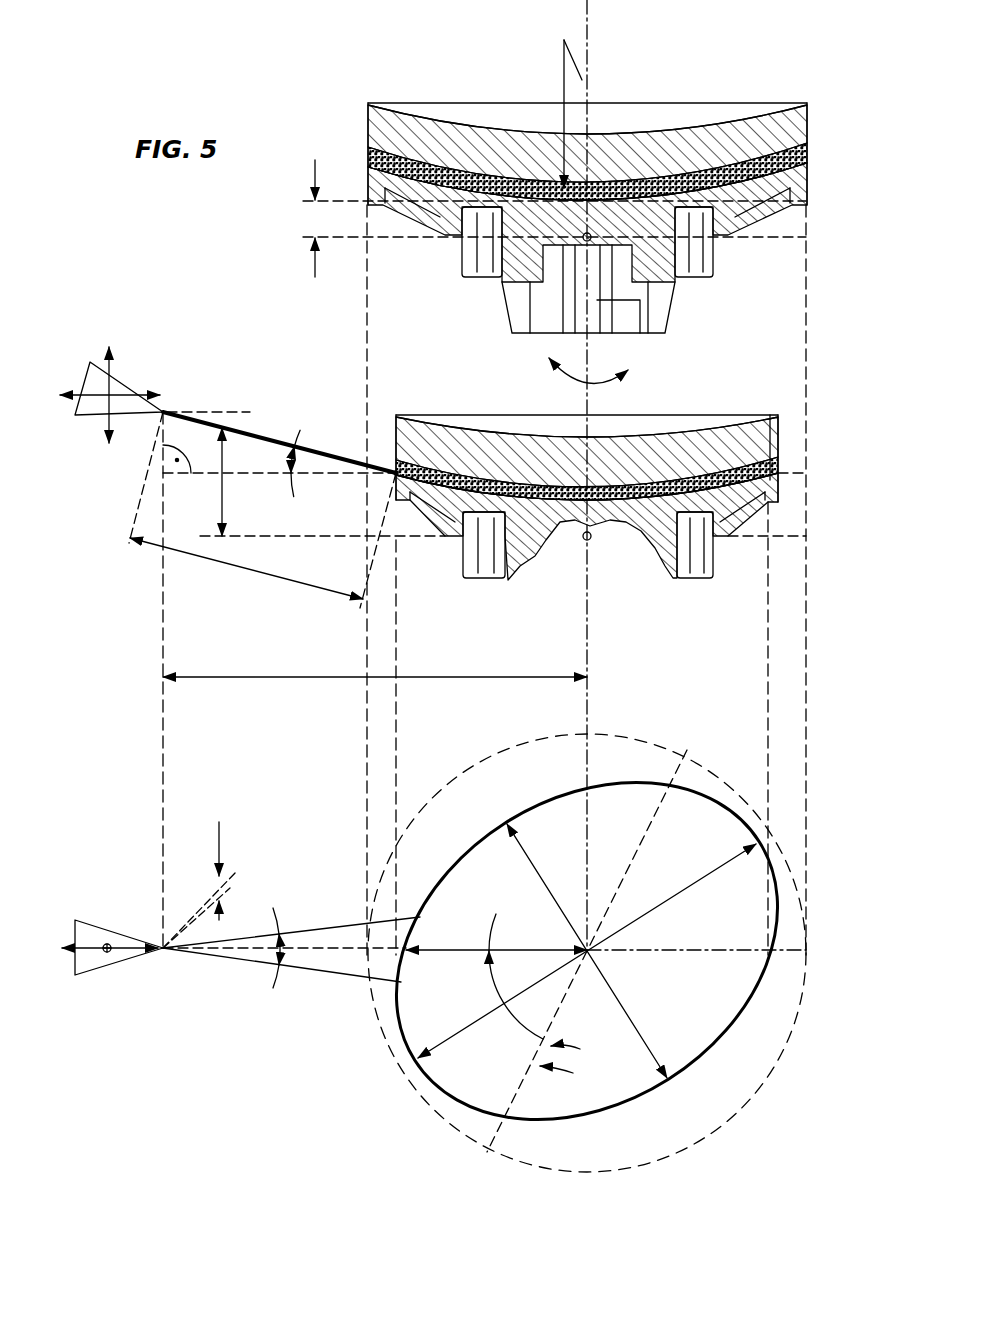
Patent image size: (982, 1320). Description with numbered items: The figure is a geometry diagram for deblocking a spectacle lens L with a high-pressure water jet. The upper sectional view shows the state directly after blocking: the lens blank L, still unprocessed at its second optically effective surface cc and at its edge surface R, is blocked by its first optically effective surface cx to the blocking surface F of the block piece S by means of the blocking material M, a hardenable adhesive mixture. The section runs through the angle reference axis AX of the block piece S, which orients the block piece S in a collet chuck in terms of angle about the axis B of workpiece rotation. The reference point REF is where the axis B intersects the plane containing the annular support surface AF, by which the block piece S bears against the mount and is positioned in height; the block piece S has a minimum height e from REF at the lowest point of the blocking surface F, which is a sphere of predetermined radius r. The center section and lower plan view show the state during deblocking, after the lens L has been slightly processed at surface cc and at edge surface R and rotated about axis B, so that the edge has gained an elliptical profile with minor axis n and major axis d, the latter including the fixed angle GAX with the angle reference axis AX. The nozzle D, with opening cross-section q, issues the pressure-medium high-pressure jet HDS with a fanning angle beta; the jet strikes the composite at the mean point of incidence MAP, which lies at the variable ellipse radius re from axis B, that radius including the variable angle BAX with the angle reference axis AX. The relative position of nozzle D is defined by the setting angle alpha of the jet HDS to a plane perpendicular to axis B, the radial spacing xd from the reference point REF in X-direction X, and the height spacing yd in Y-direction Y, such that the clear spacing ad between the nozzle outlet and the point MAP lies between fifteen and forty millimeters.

The spectacle lens L is at (713, 140).
The second optically effective surface cc is at (685, 127).
The first optically effective surface cx is at (807, 163).
The blocking surface F is at (370, 153).
The blocking material M is at (440, 163).
The annular support surface AF is at (445, 235).
The block piece S is at (498, 290).
The reference point REF is at (565, 233).
The radius r is at (564, 83).
The height e is at (313, 220).
The axis of workpiece rotation B is at (620, 380).
The X-direction X is at (127, 392).
The Y-direction Y is at (103, 413).
The nozzle D is at (122, 408).
The pressure-medium high-pressure jet HDS is at (257, 436).
The setting angle alpha is at (231, 463).
The height spacing yd is at (218, 473).
The mean point of incidence MAP is at (394, 474).
The clear spacing ad is at (212, 560).
The radial spacing xd is at (257, 676).
The nozzle opening cross-section q is at (222, 888).
The angle of jet fanning beta is at (287, 955).
The ellipse radius re is at (487, 943).
The angle BAX is at (498, 965).
The angle GAX is at (505, 1040).
The angle reference axis AX is at (637, 855).
The major axis d is at (657, 908).
The minor axis n is at (607, 981).
The edge surface R is at (368, 128).